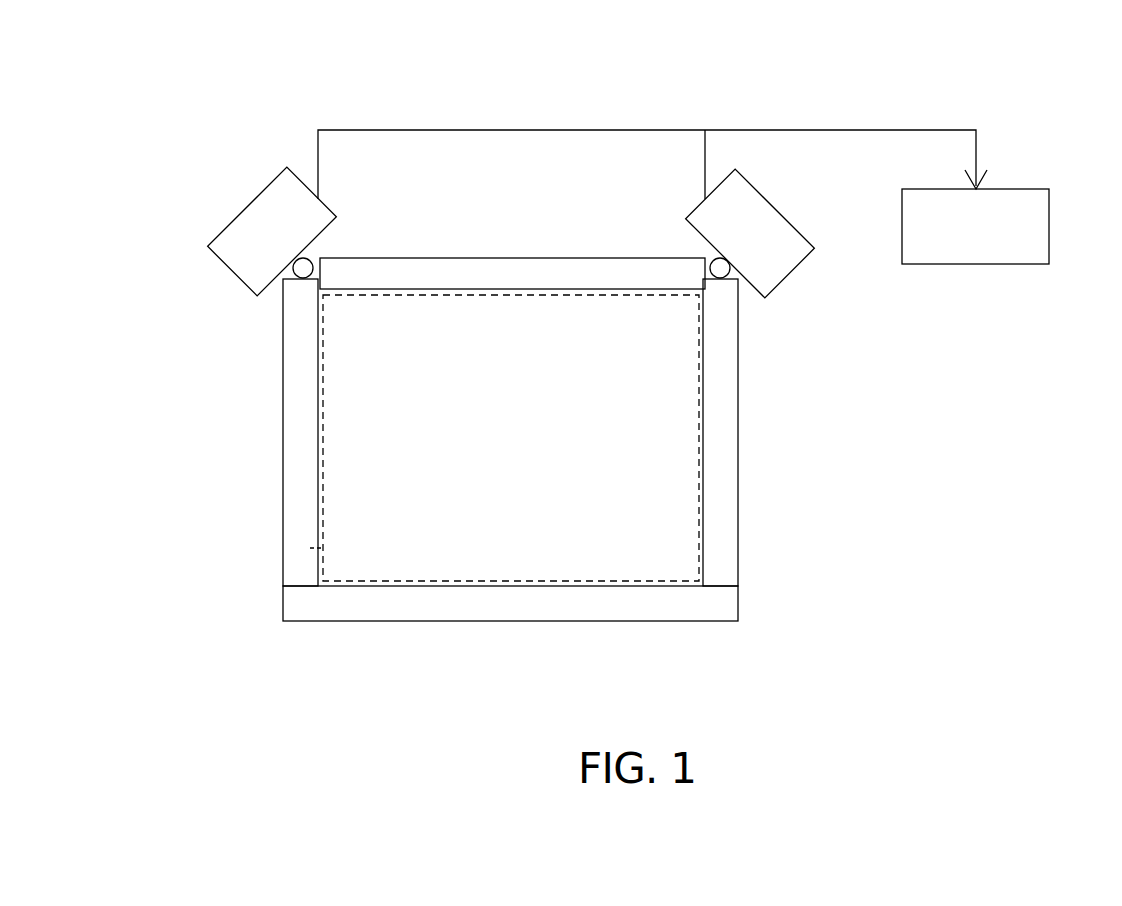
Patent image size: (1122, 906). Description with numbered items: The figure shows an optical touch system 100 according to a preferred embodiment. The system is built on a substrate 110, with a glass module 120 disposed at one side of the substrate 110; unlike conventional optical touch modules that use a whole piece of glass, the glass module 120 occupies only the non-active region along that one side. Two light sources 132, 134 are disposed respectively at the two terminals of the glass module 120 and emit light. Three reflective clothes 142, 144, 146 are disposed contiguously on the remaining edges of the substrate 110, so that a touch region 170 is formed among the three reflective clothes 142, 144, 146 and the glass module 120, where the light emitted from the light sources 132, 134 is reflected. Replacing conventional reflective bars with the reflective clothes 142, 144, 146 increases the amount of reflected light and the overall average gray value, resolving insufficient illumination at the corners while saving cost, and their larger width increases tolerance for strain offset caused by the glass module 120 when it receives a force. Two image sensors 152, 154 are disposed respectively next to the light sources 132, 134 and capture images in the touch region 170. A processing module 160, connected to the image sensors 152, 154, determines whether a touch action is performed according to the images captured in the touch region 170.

The optical touch system 100 is at (82, 58).
The substrate 110 is at (689, 570).
The glass module 120 is at (511, 258).
The light source 132 is at (297, 277).
The light source 134 is at (730, 272).
The reflective cloth 142 is at (681, 622).
The reflective cloth 144 is at (739, 433).
The reflective cloth 146 is at (283, 497).
The image sensor 152 is at (247, 206).
The image sensor 154 is at (775, 208).
The processing module 160 is at (1049, 228).
The touch region 170 is at (323, 548).